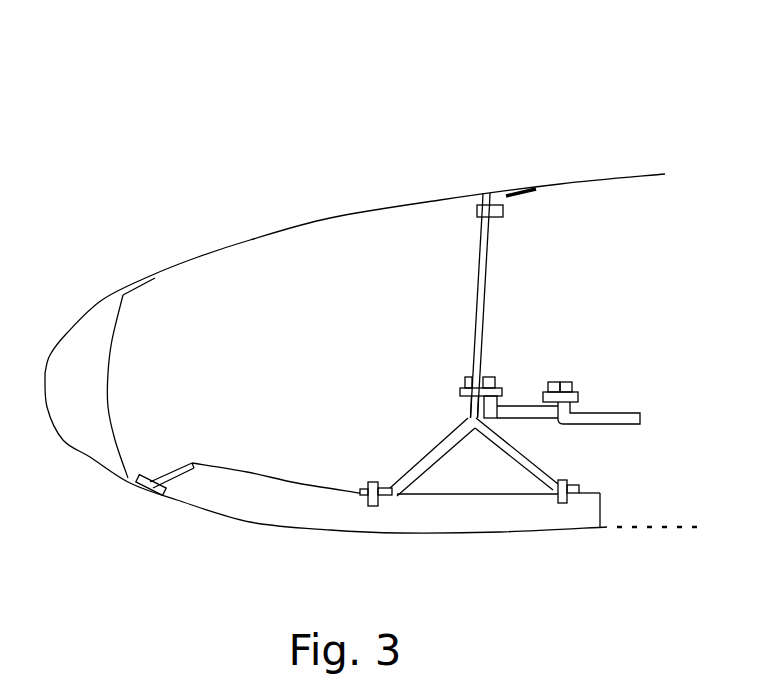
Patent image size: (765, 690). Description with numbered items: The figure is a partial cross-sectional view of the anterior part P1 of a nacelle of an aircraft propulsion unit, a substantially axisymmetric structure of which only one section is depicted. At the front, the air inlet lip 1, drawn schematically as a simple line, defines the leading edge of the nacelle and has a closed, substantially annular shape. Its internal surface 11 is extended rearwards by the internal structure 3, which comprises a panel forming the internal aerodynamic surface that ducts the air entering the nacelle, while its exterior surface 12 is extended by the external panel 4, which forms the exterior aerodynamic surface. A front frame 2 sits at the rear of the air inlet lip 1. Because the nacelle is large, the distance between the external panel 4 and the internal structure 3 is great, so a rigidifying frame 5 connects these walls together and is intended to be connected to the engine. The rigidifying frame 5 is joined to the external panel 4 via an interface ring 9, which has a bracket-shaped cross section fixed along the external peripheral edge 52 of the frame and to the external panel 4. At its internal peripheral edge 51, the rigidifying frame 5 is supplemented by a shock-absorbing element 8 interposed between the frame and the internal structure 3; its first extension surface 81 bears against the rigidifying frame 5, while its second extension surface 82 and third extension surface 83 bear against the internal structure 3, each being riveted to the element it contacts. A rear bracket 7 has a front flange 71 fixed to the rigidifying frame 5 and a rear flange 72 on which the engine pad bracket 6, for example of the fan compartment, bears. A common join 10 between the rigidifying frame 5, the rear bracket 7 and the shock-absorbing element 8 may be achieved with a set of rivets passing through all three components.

The anterior part P1 is at (149, 100).
The air inlet lip 1 is at (67, 334).
The front frame 2 is at (117, 316).
The internal structure 3 is at (287, 517).
The external panel 4 is at (420, 202).
The rigidifying frame 5 is at (489, 255).
The engine pad bracket 6 is at (631, 413).
The rear bracket 7 is at (509, 402).
The shock-absorbing element 8 is at (428, 458).
The interface ring 9 is at (517, 193).
The common join 10 is at (497, 413).
The internal surface 11 is at (90, 457).
The exterior surface 12 is at (198, 258).
The internal peripheral edge 51 is at (460, 392).
The external peripheral edge 52 is at (486, 193).
The front flange 71 is at (494, 377).
The rear flange 72 is at (552, 374).
The first extension surface 81 is at (469, 377).
The second extension surface 82 is at (385, 484).
The third extension surface 83 is at (580, 488).